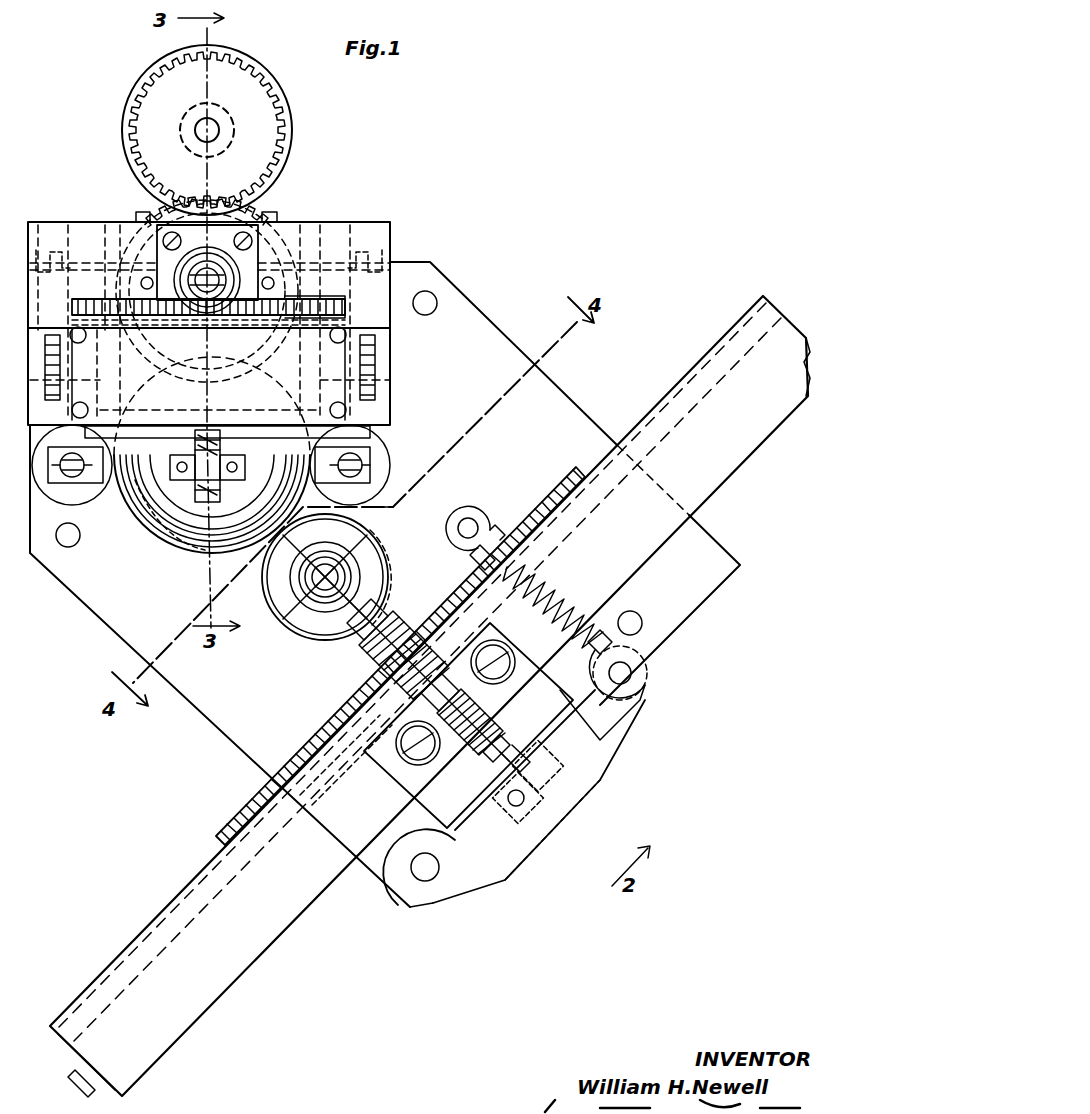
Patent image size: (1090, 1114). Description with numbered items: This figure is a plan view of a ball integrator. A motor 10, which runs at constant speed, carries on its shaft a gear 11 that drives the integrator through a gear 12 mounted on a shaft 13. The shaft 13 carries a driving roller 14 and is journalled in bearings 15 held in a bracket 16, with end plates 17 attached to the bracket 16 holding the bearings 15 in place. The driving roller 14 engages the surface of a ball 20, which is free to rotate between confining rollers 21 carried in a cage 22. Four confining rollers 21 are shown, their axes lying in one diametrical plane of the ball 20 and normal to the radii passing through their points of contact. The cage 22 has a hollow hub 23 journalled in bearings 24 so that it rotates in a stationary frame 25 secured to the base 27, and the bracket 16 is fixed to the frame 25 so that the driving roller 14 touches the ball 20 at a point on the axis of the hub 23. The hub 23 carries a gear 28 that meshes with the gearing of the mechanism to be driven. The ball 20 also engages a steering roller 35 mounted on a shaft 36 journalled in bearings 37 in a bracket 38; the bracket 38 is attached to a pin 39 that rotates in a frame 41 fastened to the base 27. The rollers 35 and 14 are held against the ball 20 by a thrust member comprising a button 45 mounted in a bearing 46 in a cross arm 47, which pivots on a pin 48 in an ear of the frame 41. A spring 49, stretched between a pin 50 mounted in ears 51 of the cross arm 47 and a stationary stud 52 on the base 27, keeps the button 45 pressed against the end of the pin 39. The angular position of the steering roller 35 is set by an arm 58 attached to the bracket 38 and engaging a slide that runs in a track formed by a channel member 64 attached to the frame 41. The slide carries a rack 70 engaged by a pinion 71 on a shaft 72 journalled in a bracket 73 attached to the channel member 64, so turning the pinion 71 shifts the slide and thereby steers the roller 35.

The motor 10 is at (258, 78).
The gear 11 is at (275, 127).
The gear 12 is at (226, 212).
The shaft 13 is at (190, 270).
The driving roller 14 is at (165, 208).
The bearings 15 is at (240, 262).
The bracket 16 is at (325, 222).
The end plates 17 is at (250, 258).
The ball 20 is at (140, 497).
The confining rollers 21 is at (62, 500).
The cage 22 is at (385, 443).
The hollow hub 23 is at (385, 358).
The bearings 24 is at (388, 338).
The stationary frame 25 is at (385, 393).
The base 27 is at (380, 870).
The gear 28 is at (350, 300).
The steering roller 35 is at (360, 542).
The shaft 36 is at (342, 572).
The bearings 37 is at (292, 610).
The bracket 38 is at (400, 592).
The pin 39 is at (505, 766).
The frame 41 is at (452, 810).
The button 45 is at (512, 806).
The bearing 46 is at (570, 762).
The cross arm 47 is at (520, 855).
The pin 48 is at (425, 882).
The spring 49 is at (632, 616).
The pin 50 is at (630, 676).
The ears 51 is at (622, 695).
The stationary stud 52 is at (468, 522).
The arm 58 is at (380, 680).
The channel member 64 is at (185, 908).
The rack 70 is at (330, 738).
The pinion 71 is at (372, 655).
The shaft 72 is at (500, 722).
The bracket 73 is at (398, 766).